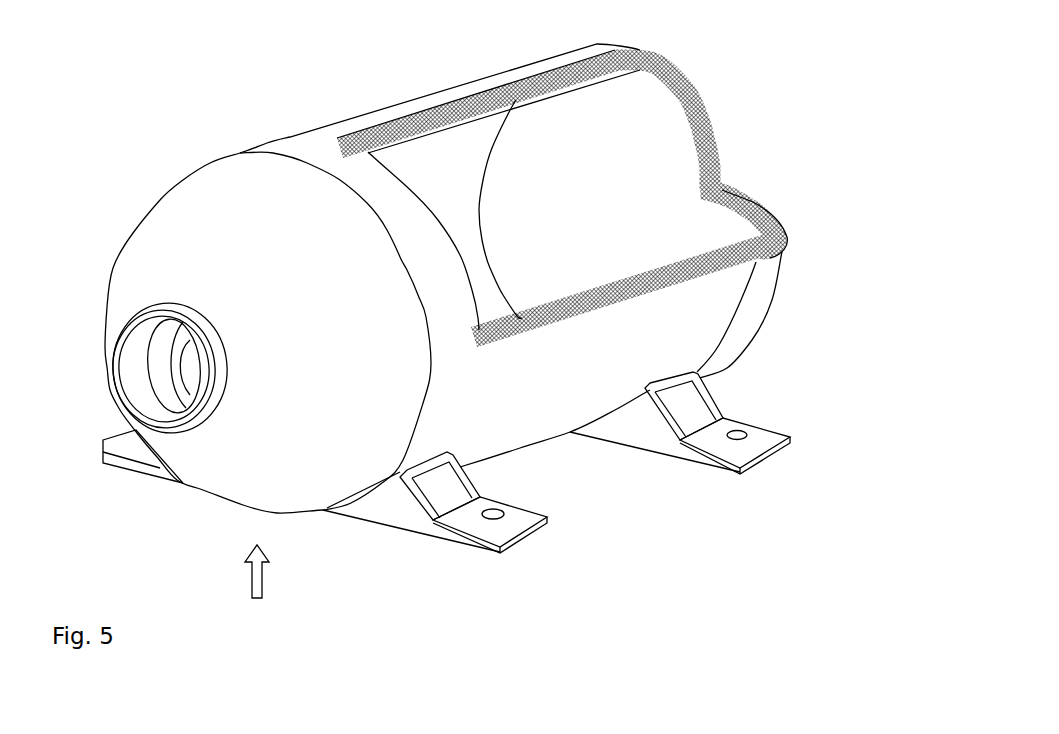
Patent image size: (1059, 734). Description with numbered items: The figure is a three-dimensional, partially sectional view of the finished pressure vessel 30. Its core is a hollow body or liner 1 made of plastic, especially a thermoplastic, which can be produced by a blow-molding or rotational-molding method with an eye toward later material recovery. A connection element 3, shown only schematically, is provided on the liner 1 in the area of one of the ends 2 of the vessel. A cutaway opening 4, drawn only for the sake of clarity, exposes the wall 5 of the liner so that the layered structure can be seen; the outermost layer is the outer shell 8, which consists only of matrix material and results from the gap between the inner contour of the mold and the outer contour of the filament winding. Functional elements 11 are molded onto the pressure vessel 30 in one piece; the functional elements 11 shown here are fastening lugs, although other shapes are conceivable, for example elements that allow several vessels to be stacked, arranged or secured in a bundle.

The hollow body 1 is at (508, 402).
The end of the vessel 2 is at (158, 263).
The connection element 3 is at (150, 398).
The cutaway opening 4 is at (668, 238).
The wall of the liner 5 is at (750, 257).
The outer shell 8 is at (787, 240).
The functional elements 11 is at (707, 448).
The pressure vessel 30 is at (257, 585).